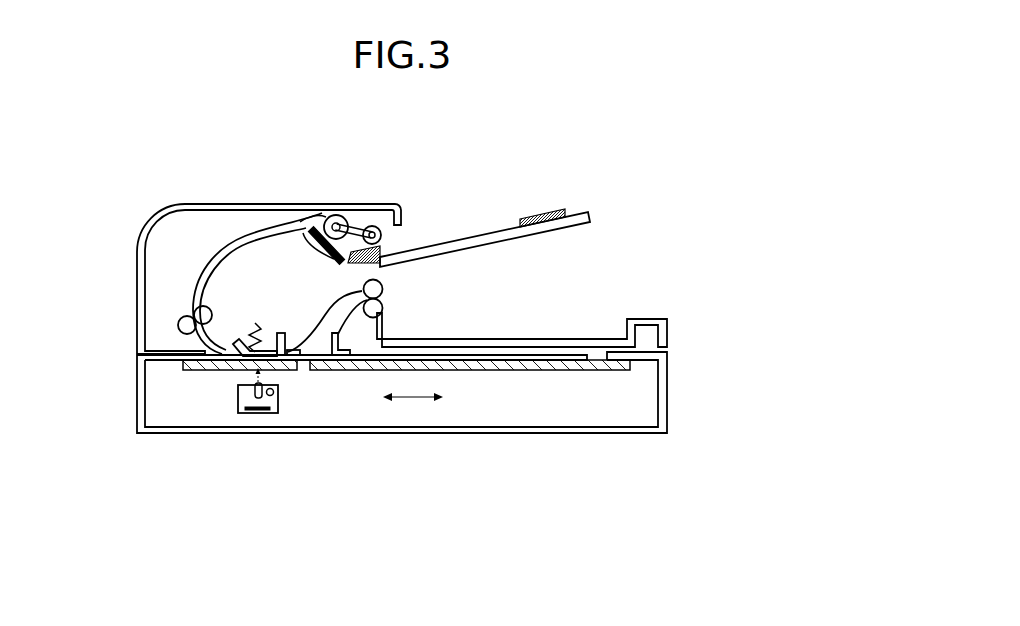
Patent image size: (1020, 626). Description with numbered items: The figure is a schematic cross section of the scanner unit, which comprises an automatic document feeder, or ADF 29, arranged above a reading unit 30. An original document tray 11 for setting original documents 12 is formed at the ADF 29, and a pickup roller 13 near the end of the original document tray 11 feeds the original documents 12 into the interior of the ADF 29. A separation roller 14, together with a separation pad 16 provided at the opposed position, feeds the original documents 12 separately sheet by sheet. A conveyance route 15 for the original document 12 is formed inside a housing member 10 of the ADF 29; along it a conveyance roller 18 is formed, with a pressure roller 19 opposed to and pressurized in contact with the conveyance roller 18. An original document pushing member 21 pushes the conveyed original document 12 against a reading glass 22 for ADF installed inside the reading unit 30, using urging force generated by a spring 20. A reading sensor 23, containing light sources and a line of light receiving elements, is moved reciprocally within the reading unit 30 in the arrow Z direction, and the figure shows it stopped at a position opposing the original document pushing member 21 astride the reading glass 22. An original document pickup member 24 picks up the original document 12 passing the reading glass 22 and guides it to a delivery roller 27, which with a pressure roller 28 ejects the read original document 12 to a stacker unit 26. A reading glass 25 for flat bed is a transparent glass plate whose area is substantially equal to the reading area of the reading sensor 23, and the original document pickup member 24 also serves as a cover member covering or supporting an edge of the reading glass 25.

The housing member 10 is at (196, 204).
The original document tray 11 is at (578, 212).
The original document 12 is at (496, 221).
The pickup roller 13 is at (377, 228).
The separation roller 14 is at (337, 219).
The conveyance route 15 is at (257, 230).
The separation pad 16 is at (317, 247).
The conveyance roller 18 is at (197, 310).
The pressure roller 19 is at (178, 322).
The spring 20 is at (257, 325).
The original document pushing member 21 is at (237, 352).
The reading glass for ADF 22 is at (250, 352).
The reading sensor 23 is at (272, 396).
The original document pickup member 24 is at (327, 356).
The reading glass for flat bed 25 is at (514, 365).
The stacker unit 26 is at (560, 338).
The delivery roller 27 is at (382, 286).
The pressure roller 28 is at (382, 303).
The automatic document feeder (ADF) 29 is at (122, 194).
The reading unit 30 is at (618, 460).